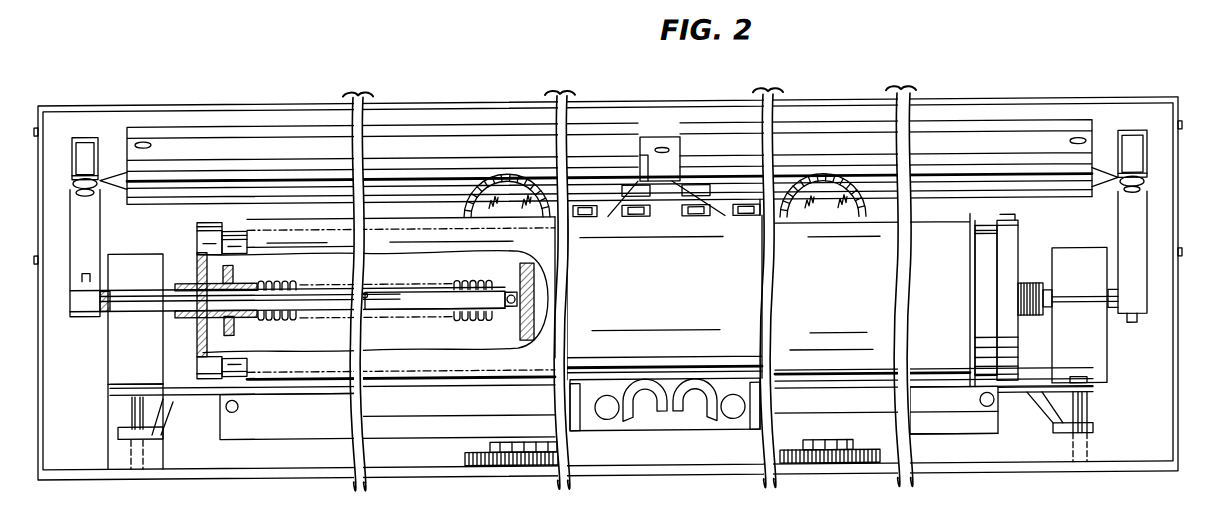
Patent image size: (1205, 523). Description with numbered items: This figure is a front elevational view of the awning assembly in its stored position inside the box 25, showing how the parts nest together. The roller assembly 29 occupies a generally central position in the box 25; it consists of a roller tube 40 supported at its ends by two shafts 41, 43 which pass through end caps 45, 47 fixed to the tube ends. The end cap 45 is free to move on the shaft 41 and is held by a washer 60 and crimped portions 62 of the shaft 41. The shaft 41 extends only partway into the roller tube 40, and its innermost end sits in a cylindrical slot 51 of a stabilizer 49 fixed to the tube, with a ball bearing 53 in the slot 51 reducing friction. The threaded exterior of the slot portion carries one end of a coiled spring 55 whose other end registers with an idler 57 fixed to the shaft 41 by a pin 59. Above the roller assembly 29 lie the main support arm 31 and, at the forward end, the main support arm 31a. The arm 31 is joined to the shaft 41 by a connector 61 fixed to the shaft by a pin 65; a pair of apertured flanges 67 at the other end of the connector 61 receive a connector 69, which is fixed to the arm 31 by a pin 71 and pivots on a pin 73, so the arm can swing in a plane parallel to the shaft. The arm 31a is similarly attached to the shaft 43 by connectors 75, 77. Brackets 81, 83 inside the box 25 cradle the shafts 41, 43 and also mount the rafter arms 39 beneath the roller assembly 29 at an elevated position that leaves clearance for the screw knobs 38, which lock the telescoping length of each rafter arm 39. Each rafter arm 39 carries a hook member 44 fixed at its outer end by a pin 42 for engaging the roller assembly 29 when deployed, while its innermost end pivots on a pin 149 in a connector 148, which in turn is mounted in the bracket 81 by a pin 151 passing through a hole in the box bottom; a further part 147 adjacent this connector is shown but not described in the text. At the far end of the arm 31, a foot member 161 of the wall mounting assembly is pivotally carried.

The box 25 is at (85, 97).
The roller assembly 29 is at (173, 241).
The main support arm 31 is at (224, 150).
The main support arm 31a is at (810, 148).
The screw knob 38 is at (500, 469).
The rafter arm 39 is at (990, 228).
The roller tube 40 is at (236, 229).
The shaft 41 is at (107, 335).
The pin 42 is at (607, 423).
The shaft 43 is at (1113, 309).
The hook member 44 is at (632, 424).
The end cap 45 is at (197, 289).
The end cap 47 is at (1008, 259).
The stabilizer 49 is at (532, 337).
The cylindrical slot 51 is at (510, 286).
The ball bearing 53 is at (517, 301).
The coiled spring 55 is at (456, 286).
The idler 57 is at (236, 291).
The pin 59 is at (247, 317).
The washer 60 is at (168, 318).
The connector 61 is at (80, 249).
The crimped portions 62 is at (165, 311).
The pin 65 is at (84, 325).
The apertured flanges 67 is at (80, 187).
The connector 69 is at (112, 146).
The pin 71 is at (150, 143).
The pin 73 is at (84, 201).
The connector 75 is at (1098, 150).
The connector 77 is at (1143, 227).
The bracket 81 is at (117, 370).
The bracket 83 is at (1097, 368).
The strap 147 is at (180, 409).
The connector 148 is at (239, 408).
The pin 149 is at (128, 397).
The pin 151 is at (1090, 421).
The foot member 161 is at (725, 218).